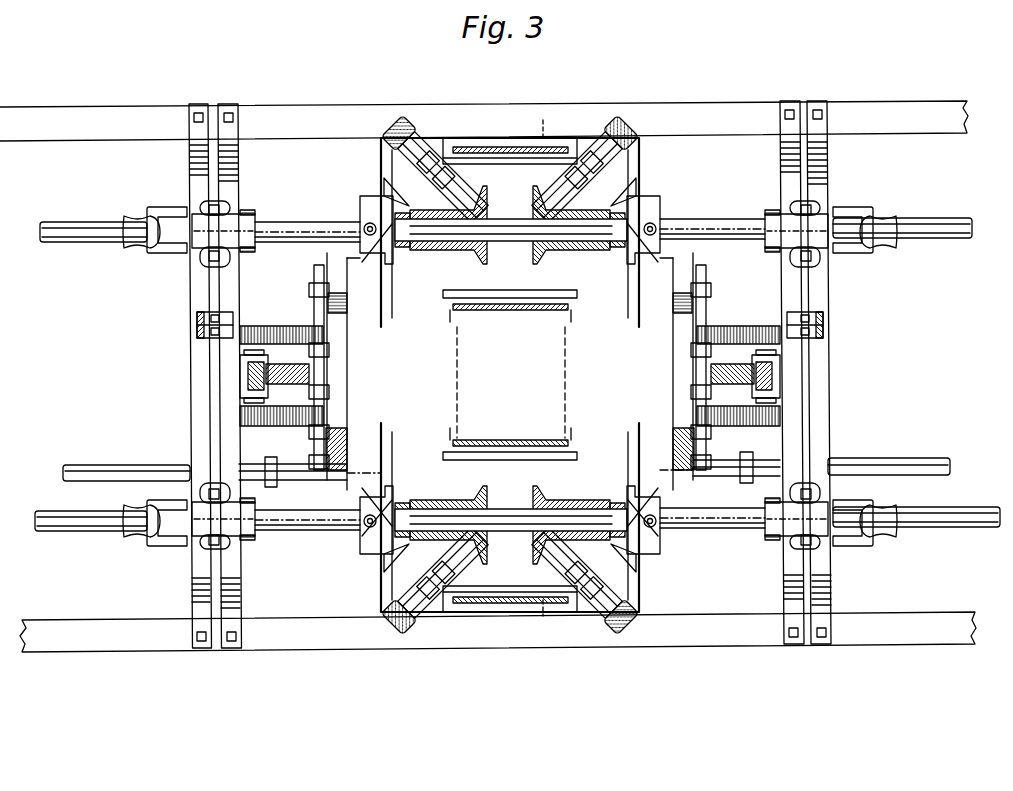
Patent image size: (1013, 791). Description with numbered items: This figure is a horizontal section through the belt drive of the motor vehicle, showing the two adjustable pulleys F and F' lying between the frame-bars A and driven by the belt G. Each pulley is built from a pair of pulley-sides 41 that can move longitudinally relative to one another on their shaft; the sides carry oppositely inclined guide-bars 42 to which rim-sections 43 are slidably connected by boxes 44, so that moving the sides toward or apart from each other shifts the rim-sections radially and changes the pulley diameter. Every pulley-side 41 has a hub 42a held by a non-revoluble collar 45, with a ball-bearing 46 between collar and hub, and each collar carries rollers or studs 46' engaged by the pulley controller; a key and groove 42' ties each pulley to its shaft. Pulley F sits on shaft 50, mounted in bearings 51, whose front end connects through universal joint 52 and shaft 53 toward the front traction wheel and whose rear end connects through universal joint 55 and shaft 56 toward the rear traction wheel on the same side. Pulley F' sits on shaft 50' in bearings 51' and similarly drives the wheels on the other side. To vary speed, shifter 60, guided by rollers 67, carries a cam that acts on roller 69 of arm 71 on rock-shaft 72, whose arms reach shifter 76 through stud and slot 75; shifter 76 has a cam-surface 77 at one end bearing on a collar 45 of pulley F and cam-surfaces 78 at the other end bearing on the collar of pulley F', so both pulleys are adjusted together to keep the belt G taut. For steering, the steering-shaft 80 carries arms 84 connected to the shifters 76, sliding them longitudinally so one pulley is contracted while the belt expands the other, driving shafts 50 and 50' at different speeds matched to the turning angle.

The frame-bars A is at (910, 105).
The pulley F is at (650, 84).
The pulley F' is at (655, 671).
The belt G is at (521, 375).
The pulley-sides 41 is at (393, 122).
The inclined guide-bars 42 is at (509, 382).
The hub 42a is at (495, 206).
The key and groove 42' is at (511, 392).
The rim-sections 43 is at (515, 146).
The boxes 44 is at (460, 157).
The collar 45 is at (360, 202).
The ball-bearing 46 is at (695, 389).
The rollers or studs 46' is at (513, 375).
The shaft 50 is at (784, 351).
The shaft 50' is at (235, 401).
The bearings 51 is at (510, 213).
The bearings 51' is at (510, 512).
The universal joint 52 is at (873, 215).
The shaft 53 is at (950, 216).
The universal joint 55 is at (160, 258).
The shaft 56 is at (80, 244).
The shifter 60 is at (252, 384).
The rollers 67 is at (257, 383).
The stud or roller 69 is at (310, 374).
The arm 71 is at (280, 407).
The rock-shaft 72 is at (324, 404).
The stud and slot 75 is at (312, 303).
The shifter 76 is at (330, 254).
The cam-surface 77 is at (313, 236).
The cam-surfaces 78 is at (362, 527).
The steering-shaft 80 is at (63, 473).
The arms 84 is at (273, 484).